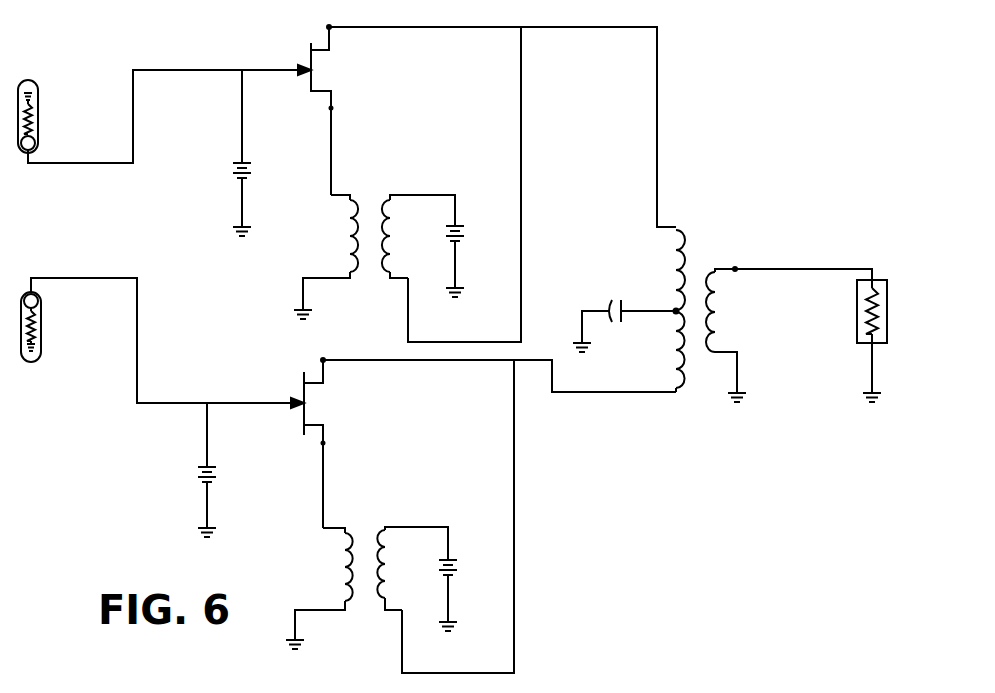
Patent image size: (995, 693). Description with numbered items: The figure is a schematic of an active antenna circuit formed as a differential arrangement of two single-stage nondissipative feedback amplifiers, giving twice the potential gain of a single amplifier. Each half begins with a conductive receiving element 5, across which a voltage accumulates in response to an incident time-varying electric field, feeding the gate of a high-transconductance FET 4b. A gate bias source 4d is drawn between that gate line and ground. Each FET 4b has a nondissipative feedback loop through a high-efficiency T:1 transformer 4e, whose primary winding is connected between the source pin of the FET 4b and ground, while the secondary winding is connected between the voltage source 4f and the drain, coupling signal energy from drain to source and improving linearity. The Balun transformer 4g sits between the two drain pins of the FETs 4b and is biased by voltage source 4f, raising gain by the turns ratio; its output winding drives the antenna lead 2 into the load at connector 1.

The connector 1 is at (860, 353).
The antenna lead 2 is at (833, 263).
The FET 4b is at (308, 97).
The gate bias battery 4d is at (238, 226).
The T:1 transformer 4e is at (340, 258).
The voltage source 4f is at (475, 280).
The Balun transformer 4g is at (667, 275).
The conductive receiving element 5 is at (48, 128).